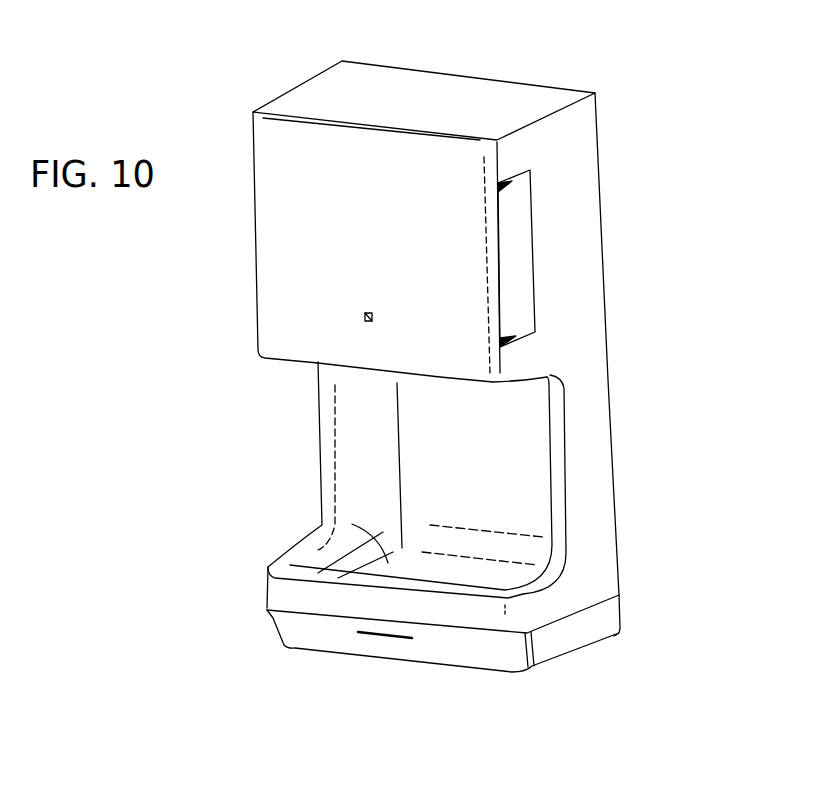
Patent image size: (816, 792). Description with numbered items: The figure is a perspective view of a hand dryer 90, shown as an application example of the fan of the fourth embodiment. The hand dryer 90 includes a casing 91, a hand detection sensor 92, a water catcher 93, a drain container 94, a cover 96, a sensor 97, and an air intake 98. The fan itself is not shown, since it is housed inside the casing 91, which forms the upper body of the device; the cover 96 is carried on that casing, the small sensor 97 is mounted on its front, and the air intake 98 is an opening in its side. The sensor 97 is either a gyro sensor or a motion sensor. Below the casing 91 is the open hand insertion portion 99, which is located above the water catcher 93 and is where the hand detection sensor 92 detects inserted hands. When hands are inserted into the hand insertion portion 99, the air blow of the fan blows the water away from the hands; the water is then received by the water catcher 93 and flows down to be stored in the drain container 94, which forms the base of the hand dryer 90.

The hand dryer 90 is at (653, 339).
The casing 91 is at (495, 97).
The hand detection sensor 92 is at (437, 455).
The water catcher 93 is at (352, 527).
The drain container 94 is at (345, 643).
The cover 96 is at (340, 240).
The sensor 97 is at (365, 314).
The air intake 98 is at (512, 235).
The hand insertion portion 99 is at (358, 462).